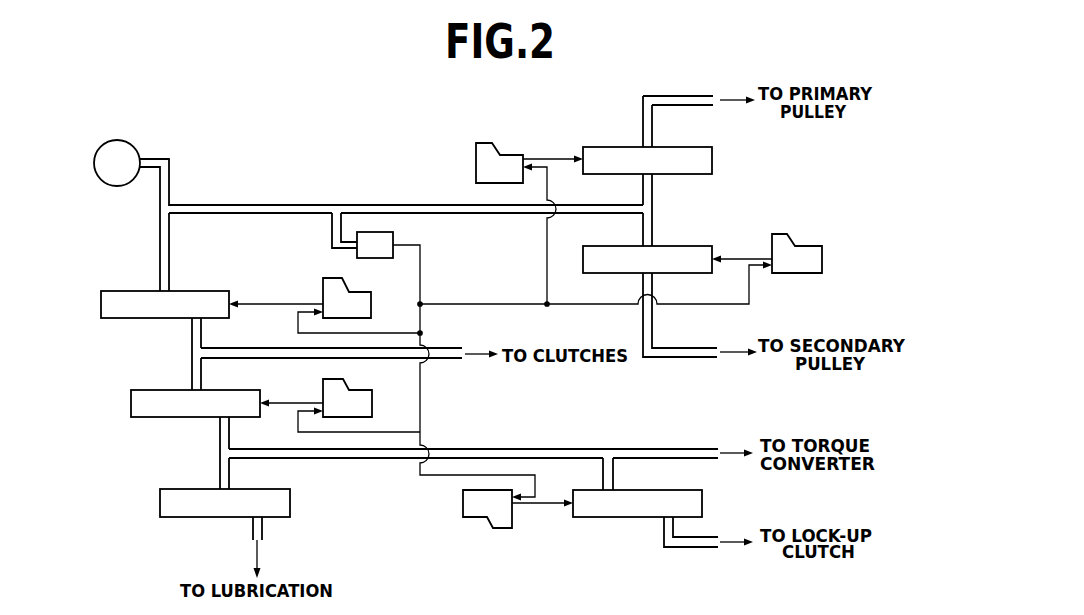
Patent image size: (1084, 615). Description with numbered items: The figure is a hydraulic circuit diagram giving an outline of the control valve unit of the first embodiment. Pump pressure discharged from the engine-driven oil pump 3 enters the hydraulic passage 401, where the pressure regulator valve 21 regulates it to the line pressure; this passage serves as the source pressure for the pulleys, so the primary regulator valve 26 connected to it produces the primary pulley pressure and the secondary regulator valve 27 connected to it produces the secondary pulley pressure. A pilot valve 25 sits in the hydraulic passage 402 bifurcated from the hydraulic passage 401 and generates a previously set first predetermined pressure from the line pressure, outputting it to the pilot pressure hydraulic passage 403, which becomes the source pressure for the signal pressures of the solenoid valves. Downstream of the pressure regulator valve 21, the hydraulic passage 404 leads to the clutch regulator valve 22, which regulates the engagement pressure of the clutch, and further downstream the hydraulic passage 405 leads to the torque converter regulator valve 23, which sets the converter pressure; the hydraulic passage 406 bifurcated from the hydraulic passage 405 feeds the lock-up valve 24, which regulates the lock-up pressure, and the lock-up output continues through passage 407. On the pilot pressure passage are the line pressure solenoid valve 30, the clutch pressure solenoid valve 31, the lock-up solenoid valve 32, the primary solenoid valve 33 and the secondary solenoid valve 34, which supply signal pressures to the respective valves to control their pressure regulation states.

The oil pump 3 is at (136, 147).
The pressure regulator valve 21 is at (122, 290).
The clutch regulator valve 22 is at (158, 388).
The torque converter regulator valve 23 is at (180, 488).
The lock-up valve 24 is at (623, 520).
The pilot valve 25 is at (396, 244).
The primary regulator valve 26 is at (608, 146).
The secondary regulator valve 27 is at (690, 245).
The line pressure solenoid valve 30 is at (360, 291).
The clutch pressure solenoid valve 31 is at (360, 389).
The lock-up solenoid valve 32 is at (462, 504).
The primary solenoid valve 33 is at (512, 154).
The secondary solenoid valve 34 is at (808, 246).
The hydraulic passage 401 is at (250, 204).
The hydraulic passage 402 is at (332, 240).
The pilot pressure hydraulic passage 403 is at (423, 299).
The hydraulic passage 404 is at (218, 348).
The hydraulic passage 405 is at (305, 460).
The hydraulic passage 406 is at (614, 475).
The lock-up clutch oil passage 407 is at (705, 549).